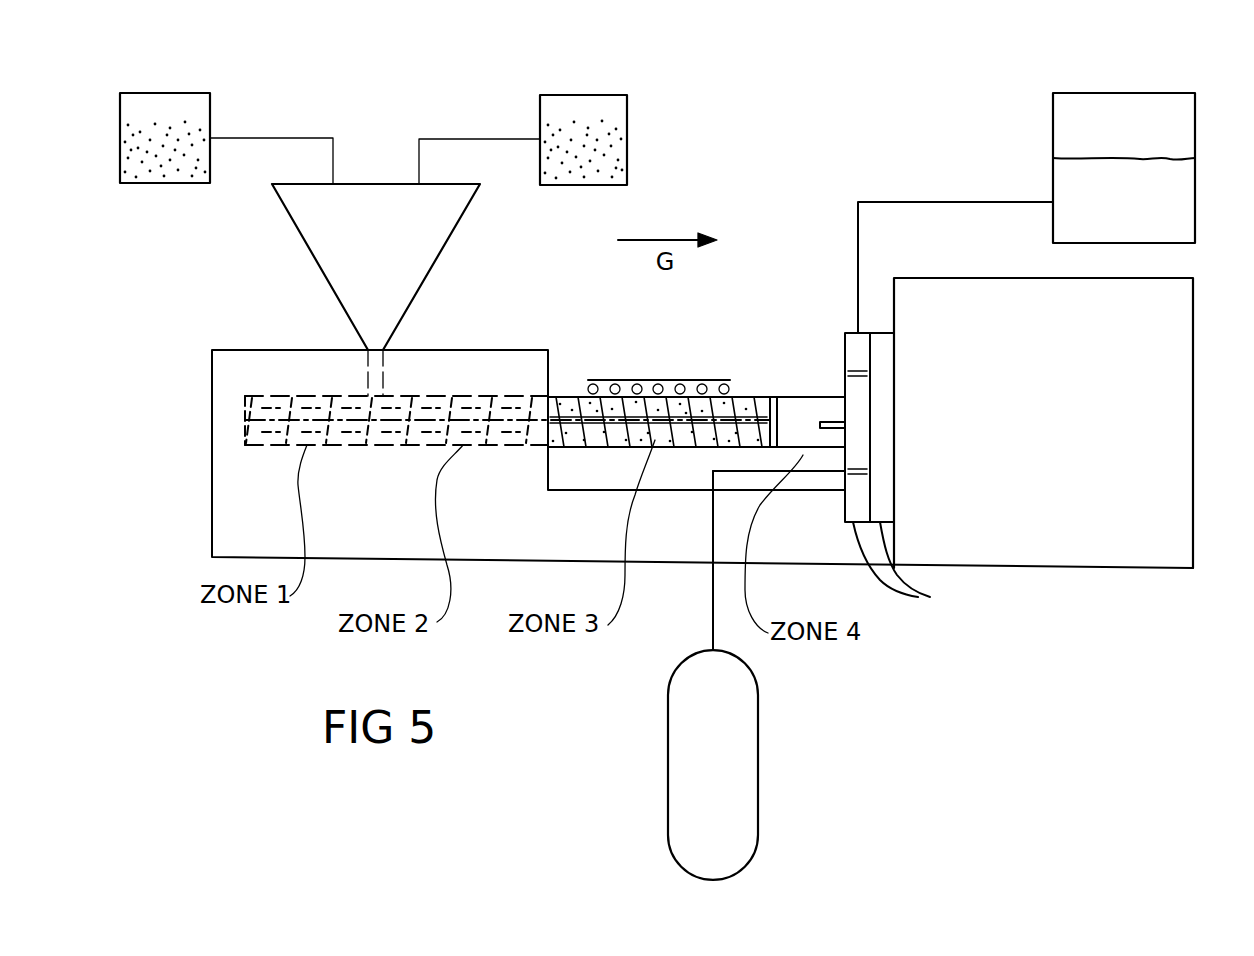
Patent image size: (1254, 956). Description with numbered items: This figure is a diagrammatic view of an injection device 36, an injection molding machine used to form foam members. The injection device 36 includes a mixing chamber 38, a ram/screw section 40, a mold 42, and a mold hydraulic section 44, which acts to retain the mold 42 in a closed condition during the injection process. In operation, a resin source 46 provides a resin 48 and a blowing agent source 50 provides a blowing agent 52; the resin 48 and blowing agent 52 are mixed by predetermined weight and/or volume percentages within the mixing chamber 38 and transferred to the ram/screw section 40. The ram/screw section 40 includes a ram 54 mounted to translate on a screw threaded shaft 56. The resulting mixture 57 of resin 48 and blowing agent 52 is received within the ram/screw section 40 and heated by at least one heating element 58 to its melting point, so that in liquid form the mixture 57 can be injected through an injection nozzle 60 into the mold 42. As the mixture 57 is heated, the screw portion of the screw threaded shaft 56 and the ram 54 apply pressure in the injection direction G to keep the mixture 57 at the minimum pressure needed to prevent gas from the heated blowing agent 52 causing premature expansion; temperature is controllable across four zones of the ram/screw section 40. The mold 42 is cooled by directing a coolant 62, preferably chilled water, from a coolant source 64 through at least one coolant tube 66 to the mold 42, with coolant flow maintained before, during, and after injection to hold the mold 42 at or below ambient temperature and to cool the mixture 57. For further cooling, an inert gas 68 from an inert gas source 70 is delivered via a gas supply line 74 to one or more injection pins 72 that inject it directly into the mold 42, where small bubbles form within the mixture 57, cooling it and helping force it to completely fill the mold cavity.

The injection device 36 is at (928, 95).
The mixing chamber 38 is at (393, 288).
The ram/screw section 40 is at (760, 397).
The mold 42 is at (918, 597).
The mold hydraulic section 44 is at (1063, 547).
The resin source 46 is at (210, 100).
The resin 48 is at (187, 148).
The blowing agent source 50 is at (553, 95).
The blowing agent 52 is at (600, 152).
The ram 54 is at (775, 397).
The screw threaded shaft 56 is at (430, 395).
The mixture 57 is at (618, 435).
The heating element 58 is at (665, 380).
The injection nozzle 60 is at (838, 420).
The coolant 62 is at (1075, 182).
The coolant source 64 is at (1165, 93).
The coolant tube 66 is at (900, 202).
The inert gas 68 is at (745, 773).
The inert gas source 70 is at (668, 692).
The injection pin 72 is at (866, 471).
The gas supply line 74 is at (713, 590).